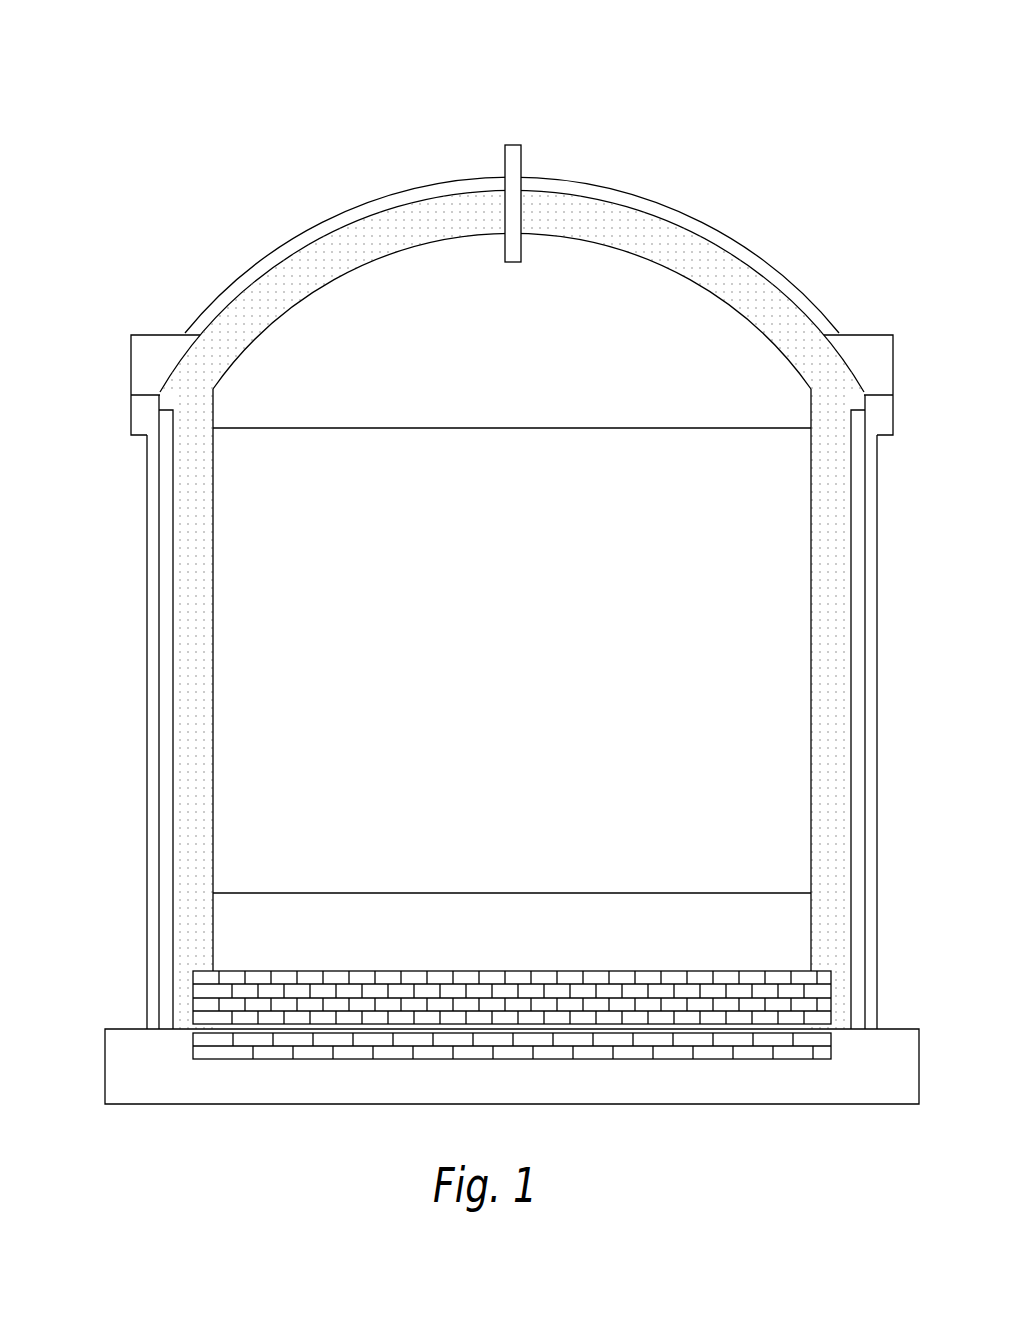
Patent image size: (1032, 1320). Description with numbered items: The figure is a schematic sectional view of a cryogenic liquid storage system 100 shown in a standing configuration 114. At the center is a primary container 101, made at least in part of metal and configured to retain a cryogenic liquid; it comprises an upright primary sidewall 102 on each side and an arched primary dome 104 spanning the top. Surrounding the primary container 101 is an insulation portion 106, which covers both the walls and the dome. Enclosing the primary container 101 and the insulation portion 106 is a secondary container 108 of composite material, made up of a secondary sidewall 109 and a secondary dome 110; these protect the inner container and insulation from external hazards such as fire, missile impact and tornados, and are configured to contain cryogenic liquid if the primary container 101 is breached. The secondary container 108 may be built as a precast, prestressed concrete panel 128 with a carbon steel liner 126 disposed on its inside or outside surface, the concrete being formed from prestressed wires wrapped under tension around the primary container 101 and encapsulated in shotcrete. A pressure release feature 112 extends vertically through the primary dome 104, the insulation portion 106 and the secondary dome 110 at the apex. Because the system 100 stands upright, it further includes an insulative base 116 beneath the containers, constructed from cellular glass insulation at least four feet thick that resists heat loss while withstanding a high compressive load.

The cryogenic liquid storage system 100 is at (187, 162).
The primary container 101 is at (260, 320).
The primary sidewall 102 is at (212, 607).
The primary dome 104 is at (638, 253).
The insulation portion 106 is at (743, 287).
The secondary container 108 is at (172, 360).
The secondary sidewall 109 is at (173, 642).
The secondary dome 110 is at (335, 230).
The pressure release feature 112 is at (505, 165).
The standing configuration 114 is at (807, 103).
The insulative base 116 is at (223, 993).
The carbon steel liner 126 is at (148, 812).
The precast concrete panel 128 is at (158, 765).